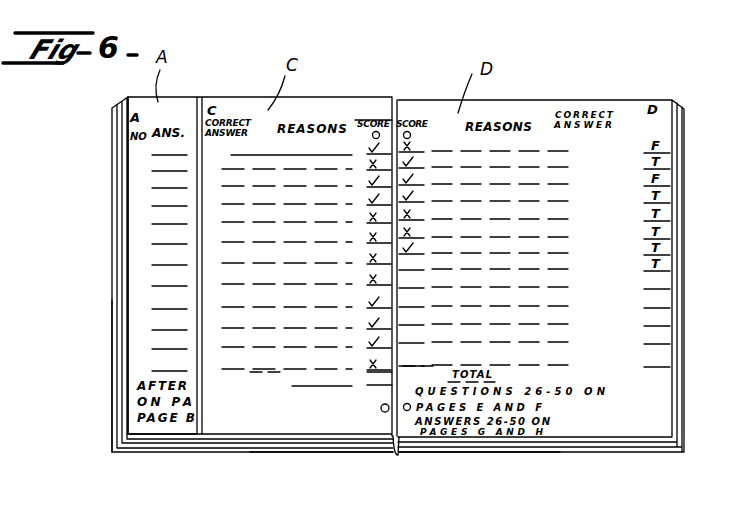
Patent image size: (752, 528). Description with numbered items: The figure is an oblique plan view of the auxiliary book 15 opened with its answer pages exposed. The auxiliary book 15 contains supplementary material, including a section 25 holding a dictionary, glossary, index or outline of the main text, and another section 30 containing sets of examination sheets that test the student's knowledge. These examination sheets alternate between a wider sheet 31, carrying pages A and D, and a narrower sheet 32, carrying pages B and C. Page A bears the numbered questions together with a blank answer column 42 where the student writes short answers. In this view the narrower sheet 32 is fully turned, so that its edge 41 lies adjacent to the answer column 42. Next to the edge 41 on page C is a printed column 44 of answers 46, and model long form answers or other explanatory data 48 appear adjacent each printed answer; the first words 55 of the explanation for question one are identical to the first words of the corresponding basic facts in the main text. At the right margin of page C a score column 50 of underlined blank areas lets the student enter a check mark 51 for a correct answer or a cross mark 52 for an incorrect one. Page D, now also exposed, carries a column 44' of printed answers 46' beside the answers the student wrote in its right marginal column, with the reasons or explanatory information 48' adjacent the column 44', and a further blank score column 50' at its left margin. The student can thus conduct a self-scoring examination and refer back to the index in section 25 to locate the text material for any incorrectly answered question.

The blank answer column 42 is at (178, 110).
The wider sheet 31 is at (180, 110).
The first words 55 is at (262, 135).
The narrower sheet 32 is at (317, 107).
The cross mark 52 is at (378, 162).
The check mark 51 is at (367, 110).
The blank score column 50' is at (433, 212).
The explanatory information 48' is at (512, 210).
The printed answers 46' is at (626, 202).
The column of printed answers 44' is at (618, 422).
The section 25 is at (112, 342).
The edge 41 is at (200, 427).
The printed column 44 is at (220, 321).
The answers 46 is at (287, 426).
The explanatory data 48 is at (321, 430).
The score column 50 is at (375, 452).
The auxiliary book 15 is at (317, 468).
The section 30 is at (510, 452).